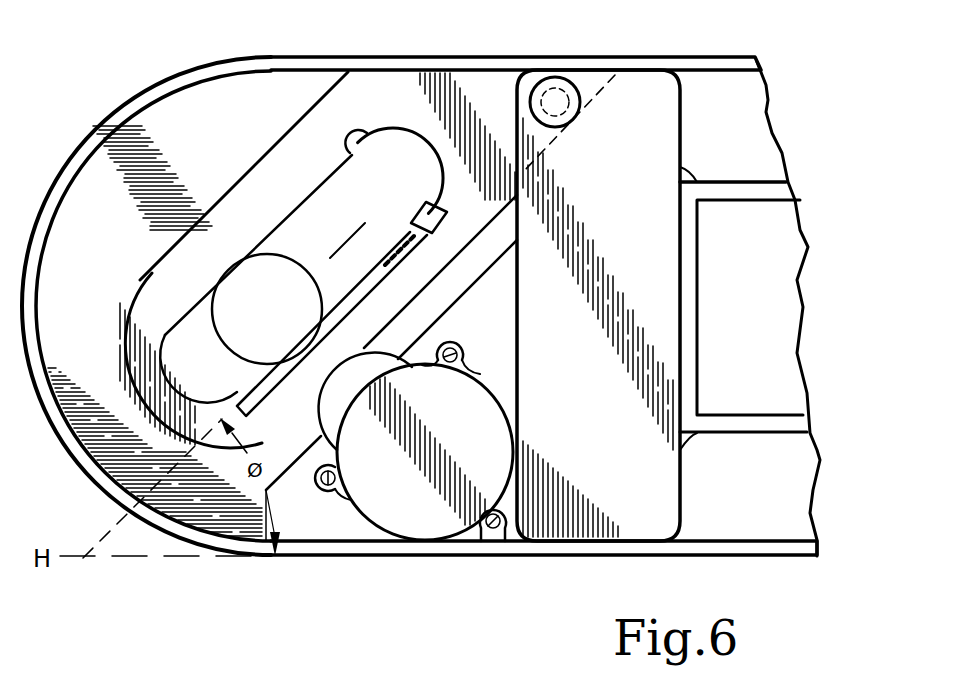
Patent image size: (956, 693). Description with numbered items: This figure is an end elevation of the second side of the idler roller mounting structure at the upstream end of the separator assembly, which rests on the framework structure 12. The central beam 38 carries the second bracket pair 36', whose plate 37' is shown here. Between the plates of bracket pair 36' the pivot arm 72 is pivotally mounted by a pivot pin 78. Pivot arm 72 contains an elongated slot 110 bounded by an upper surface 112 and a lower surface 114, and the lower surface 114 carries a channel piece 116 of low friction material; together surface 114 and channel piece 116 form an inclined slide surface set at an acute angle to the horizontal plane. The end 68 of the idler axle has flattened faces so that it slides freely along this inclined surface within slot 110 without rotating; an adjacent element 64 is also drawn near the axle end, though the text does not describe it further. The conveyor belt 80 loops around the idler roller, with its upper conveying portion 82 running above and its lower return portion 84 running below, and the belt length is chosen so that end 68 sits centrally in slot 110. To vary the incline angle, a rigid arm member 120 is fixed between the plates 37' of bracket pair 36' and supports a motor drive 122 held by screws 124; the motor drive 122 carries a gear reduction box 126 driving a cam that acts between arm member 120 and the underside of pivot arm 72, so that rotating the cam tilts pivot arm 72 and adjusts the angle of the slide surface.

The framework structure 12 is at (497, 541).
The second bracket pair 36' is at (793, 309).
The plate 37' is at (638, 305).
The central beam 38 is at (760, 182).
The tubular housing 64 is at (190, 327).
The end of axle 68 is at (282, 317).
The pivot arm 72 is at (462, 70).
The pivot pin 78 is at (557, 92).
The conveyor belt 80 is at (150, 83).
The upper conveying portion 82 is at (720, 56).
The lower return portion 84 is at (703, 558).
The elongated slot 110 is at (391, 135).
The upper surface 112 is at (367, 133).
The lower surface 114 is at (405, 232).
The channel piece 116 is at (253, 386).
The rigid arm member 120 is at (323, 523).
The motor drive 122 is at (417, 523).
The screws 124 is at (462, 360).
The gear reduction box 126 is at (373, 358).